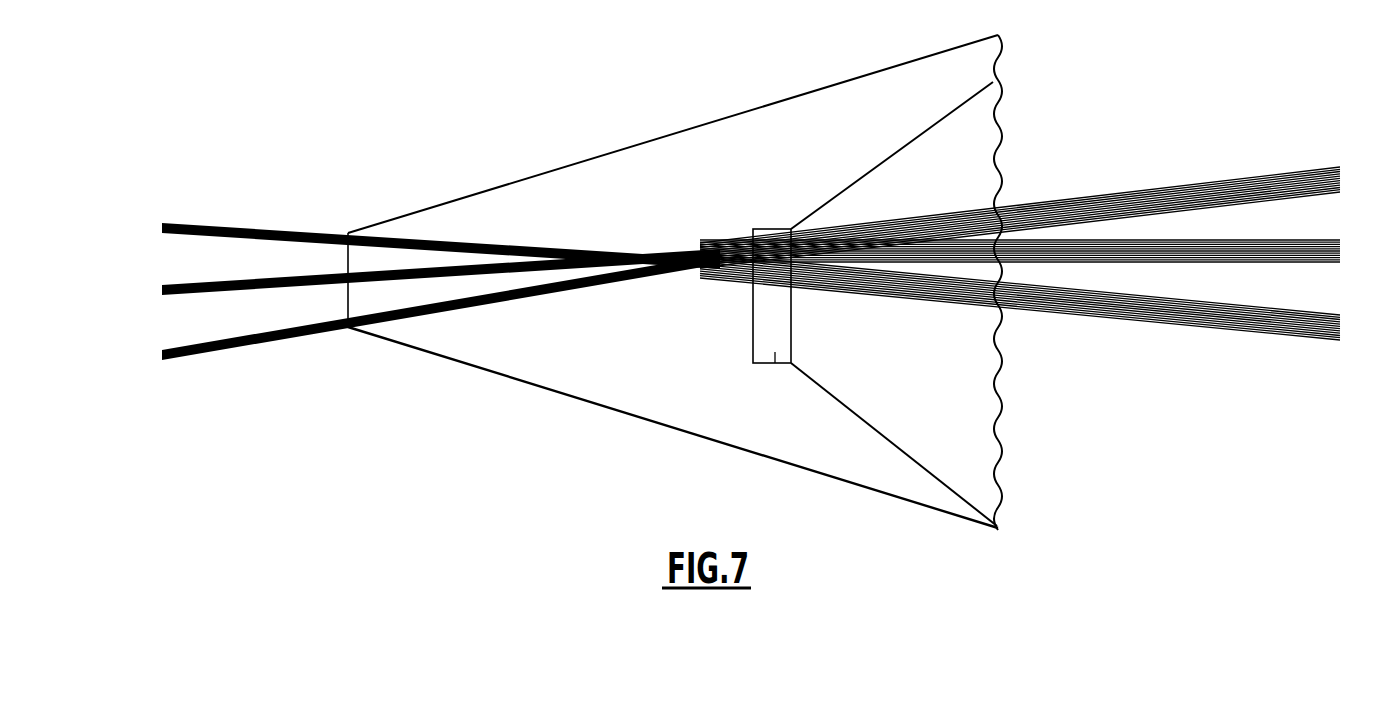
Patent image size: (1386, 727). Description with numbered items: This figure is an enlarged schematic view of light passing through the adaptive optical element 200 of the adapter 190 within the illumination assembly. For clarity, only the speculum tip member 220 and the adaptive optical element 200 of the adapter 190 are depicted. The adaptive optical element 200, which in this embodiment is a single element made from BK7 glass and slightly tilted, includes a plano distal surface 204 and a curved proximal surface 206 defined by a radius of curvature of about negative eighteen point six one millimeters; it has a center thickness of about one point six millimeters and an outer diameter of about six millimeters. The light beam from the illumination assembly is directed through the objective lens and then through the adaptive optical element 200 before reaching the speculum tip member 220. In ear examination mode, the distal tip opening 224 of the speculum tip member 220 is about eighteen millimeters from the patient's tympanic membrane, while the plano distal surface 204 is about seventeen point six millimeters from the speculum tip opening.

The adapter 190 is at (982, 440).
The adaptive optical element 200 is at (775, 352).
The plano distal surface 204 is at (753, 347).
The curved proximal surface 206 is at (838, 347).
The speculum tip member 220 is at (518, 180).
The distal tip opening 224 is at (343, 308).